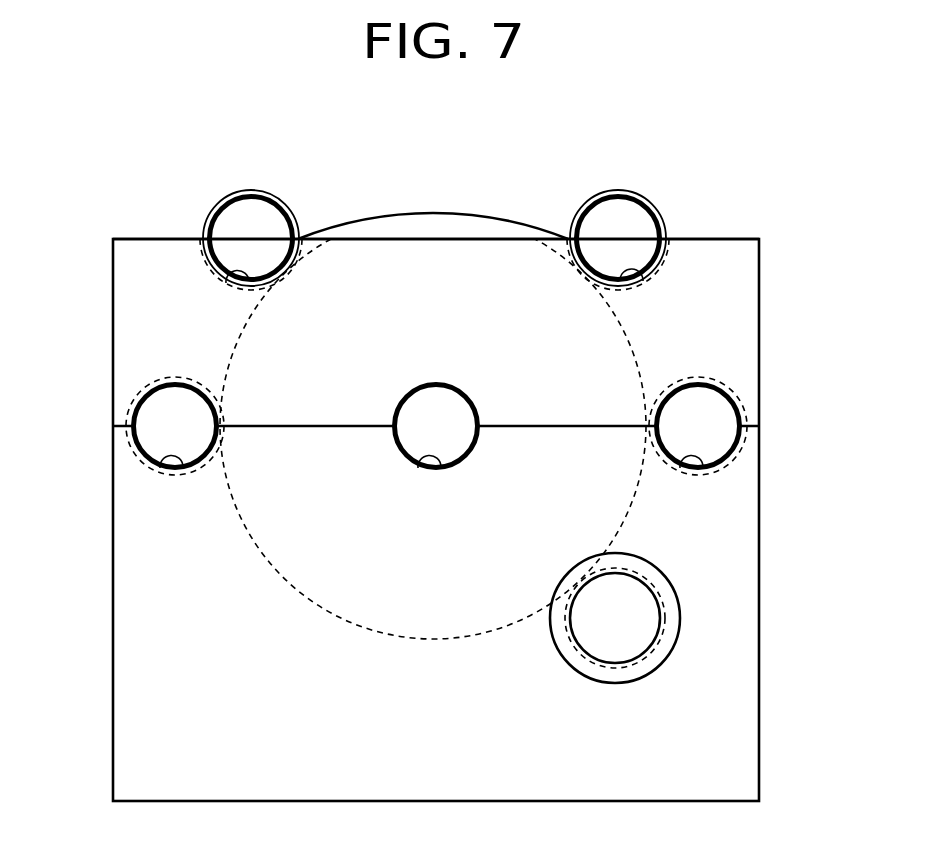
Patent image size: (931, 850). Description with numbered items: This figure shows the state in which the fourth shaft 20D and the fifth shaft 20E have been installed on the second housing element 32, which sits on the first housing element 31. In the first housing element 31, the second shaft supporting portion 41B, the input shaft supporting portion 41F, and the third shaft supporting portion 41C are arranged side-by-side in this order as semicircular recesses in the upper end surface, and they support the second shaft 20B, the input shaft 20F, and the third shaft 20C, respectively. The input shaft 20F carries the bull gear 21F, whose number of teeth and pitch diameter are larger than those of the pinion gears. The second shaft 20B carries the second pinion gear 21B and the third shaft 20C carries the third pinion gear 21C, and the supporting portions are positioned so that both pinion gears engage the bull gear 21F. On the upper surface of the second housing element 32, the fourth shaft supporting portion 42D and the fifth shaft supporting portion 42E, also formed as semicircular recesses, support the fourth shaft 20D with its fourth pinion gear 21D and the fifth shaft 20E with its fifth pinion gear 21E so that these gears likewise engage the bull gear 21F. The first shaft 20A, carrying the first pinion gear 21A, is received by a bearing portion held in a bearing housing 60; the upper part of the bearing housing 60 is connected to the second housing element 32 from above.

The first shaft 20A is at (633, 632).
The second shaft 20B is at (148, 405).
The third shaft 20C is at (720, 405).
The fourth shaft 20D is at (227, 222).
The fifth shaft 20E is at (643, 222).
The input shaft 20F is at (436, 405).
The first pinion gear 21A is at (665, 604).
The second pinion gear 21B is at (148, 382).
The third pinion gear 21C is at (720, 382).
The fourth pinion gear 21D is at (228, 193).
The fifth pinion gear 21E is at (645, 212).
The bull gear 21F is at (446, 213).
The second shaft supporting portion 41B is at (160, 468).
The third shaft supporting portion 41C is at (680, 468).
The input shaft supporting portion 41F is at (418, 468).
The fourth shaft supporting portion 42D is at (226, 283).
The fifth shaft supporting portion 42E is at (643, 281).
The first housing element 31 is at (728, 771).
The second housing element 32 is at (728, 273).
The bearing housing 60 is at (635, 682).